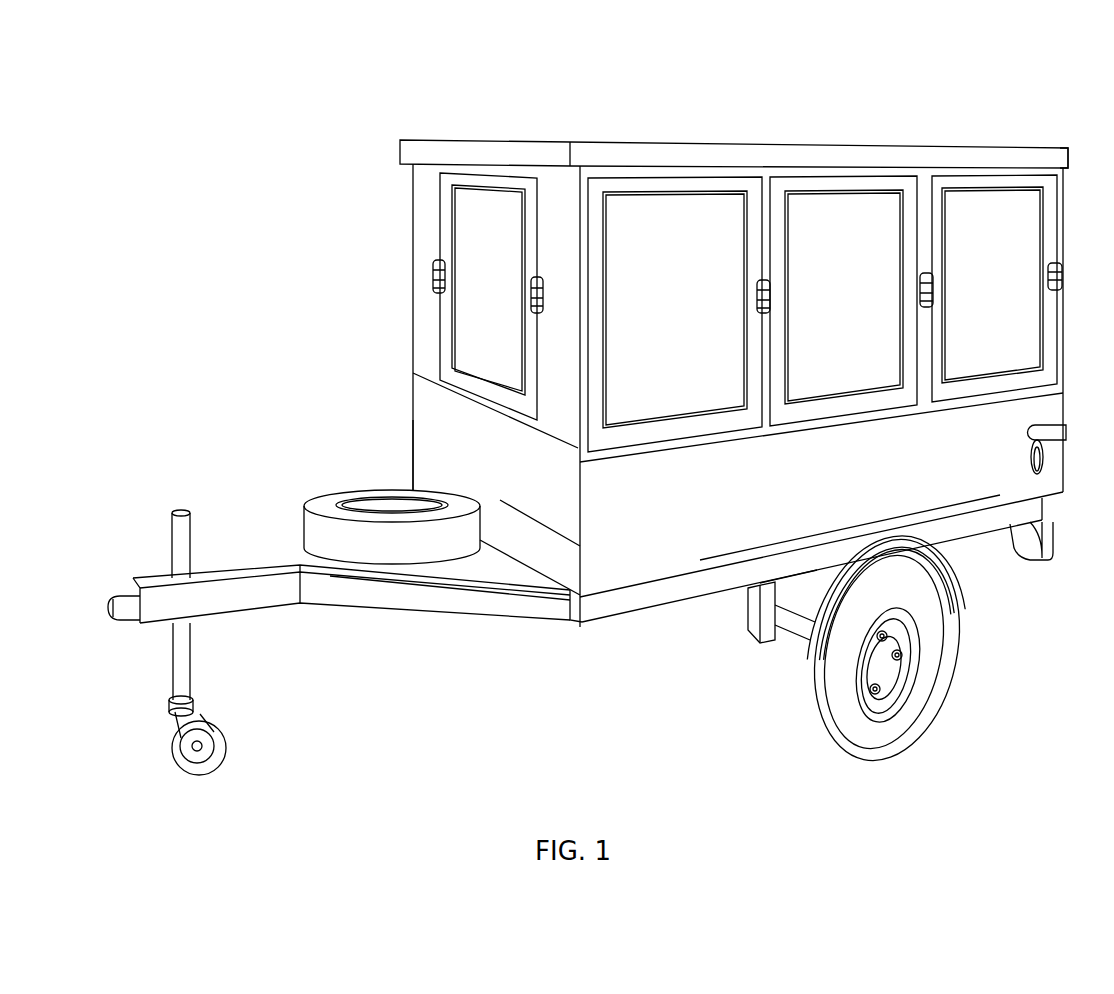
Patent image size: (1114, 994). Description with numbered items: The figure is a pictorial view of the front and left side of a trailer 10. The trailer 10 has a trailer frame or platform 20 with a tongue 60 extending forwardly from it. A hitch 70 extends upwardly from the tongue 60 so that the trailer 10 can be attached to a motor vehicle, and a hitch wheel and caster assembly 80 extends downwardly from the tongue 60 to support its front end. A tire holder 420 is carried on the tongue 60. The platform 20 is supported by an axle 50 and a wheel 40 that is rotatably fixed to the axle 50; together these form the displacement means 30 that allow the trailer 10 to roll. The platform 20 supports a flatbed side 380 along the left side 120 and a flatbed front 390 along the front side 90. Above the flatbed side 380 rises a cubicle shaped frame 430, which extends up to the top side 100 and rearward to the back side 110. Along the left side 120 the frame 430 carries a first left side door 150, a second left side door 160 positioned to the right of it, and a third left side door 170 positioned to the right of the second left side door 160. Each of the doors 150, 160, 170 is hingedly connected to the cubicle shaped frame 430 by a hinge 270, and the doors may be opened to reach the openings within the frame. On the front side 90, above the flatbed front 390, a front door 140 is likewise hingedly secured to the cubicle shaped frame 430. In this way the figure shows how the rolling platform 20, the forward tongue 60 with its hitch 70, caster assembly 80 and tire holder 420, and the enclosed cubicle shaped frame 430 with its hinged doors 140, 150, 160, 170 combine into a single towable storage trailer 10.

The trailer 10 is at (281, 111).
The platform 20 is at (640, 588).
The displacement means 30 is at (770, 662).
The wheel 40 is at (908, 675).
The axle 50 is at (740, 600).
The tongue 60 is at (360, 596).
The hitch 70 is at (183, 560).
The hitch wheel and caster assembly 80 is at (215, 722).
The front side 90 is at (399, 345).
The top side 100 is at (689, 136).
The back side 110 is at (1078, 189).
The left side 120 is at (912, 420).
The front door 140 is at (469, 295).
The first left side door 150 is at (646, 305).
The second left side door 160 is at (824, 297).
The third left side door 170 is at (976, 282).
The hinge 270 is at (1030, 441).
The flatbed side 380 is at (792, 498).
The flatbed front 390 is at (486, 480).
The tire holder 420 is at (393, 500).
The cubicle shaped frame 430 is at (1068, 175).